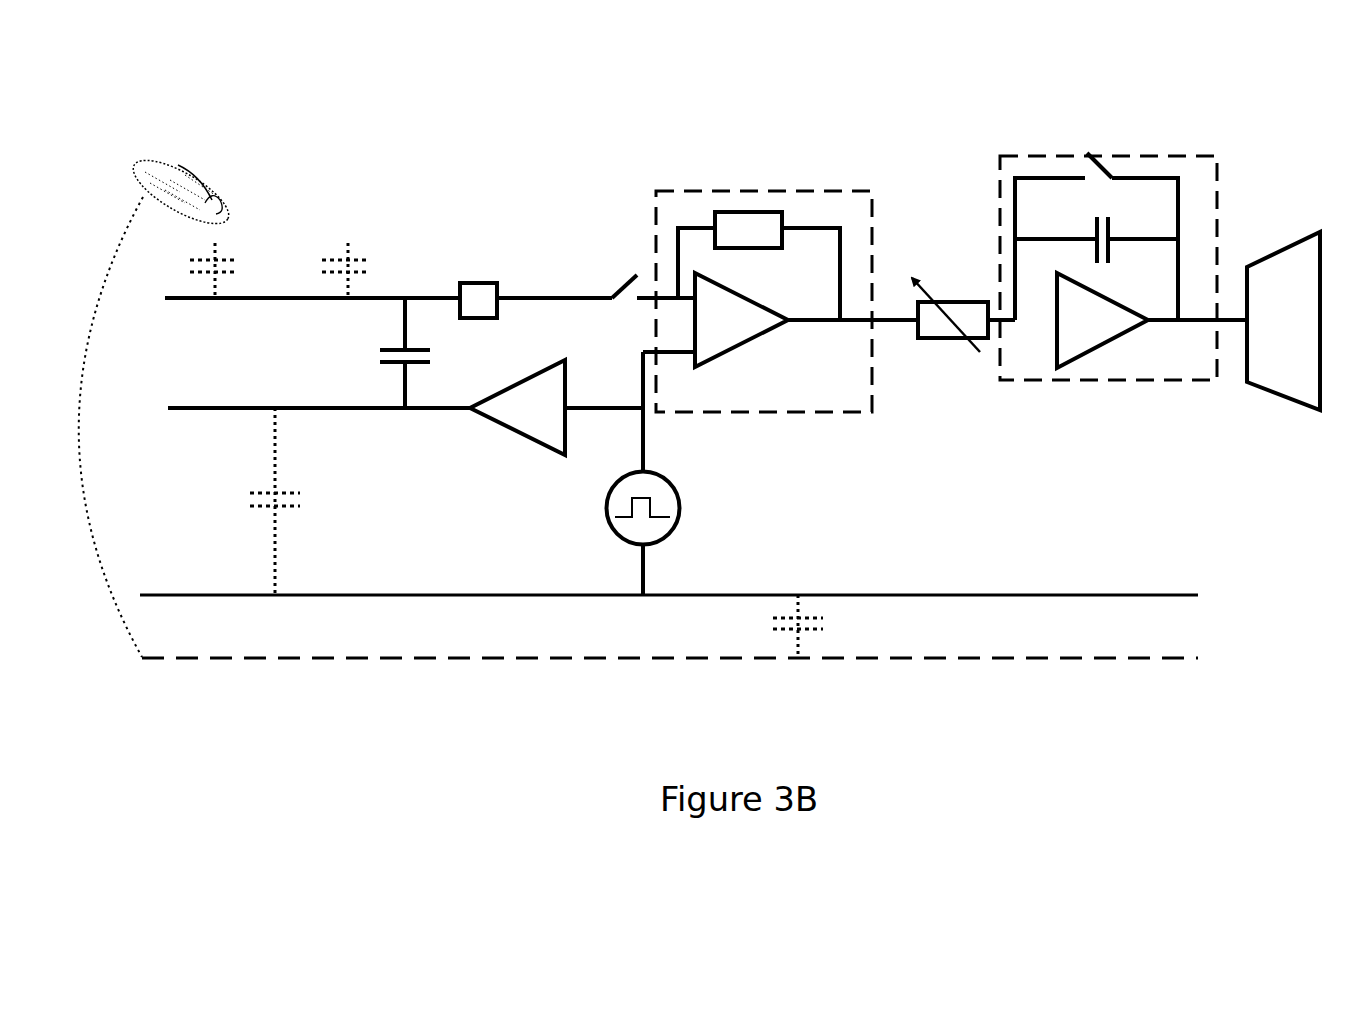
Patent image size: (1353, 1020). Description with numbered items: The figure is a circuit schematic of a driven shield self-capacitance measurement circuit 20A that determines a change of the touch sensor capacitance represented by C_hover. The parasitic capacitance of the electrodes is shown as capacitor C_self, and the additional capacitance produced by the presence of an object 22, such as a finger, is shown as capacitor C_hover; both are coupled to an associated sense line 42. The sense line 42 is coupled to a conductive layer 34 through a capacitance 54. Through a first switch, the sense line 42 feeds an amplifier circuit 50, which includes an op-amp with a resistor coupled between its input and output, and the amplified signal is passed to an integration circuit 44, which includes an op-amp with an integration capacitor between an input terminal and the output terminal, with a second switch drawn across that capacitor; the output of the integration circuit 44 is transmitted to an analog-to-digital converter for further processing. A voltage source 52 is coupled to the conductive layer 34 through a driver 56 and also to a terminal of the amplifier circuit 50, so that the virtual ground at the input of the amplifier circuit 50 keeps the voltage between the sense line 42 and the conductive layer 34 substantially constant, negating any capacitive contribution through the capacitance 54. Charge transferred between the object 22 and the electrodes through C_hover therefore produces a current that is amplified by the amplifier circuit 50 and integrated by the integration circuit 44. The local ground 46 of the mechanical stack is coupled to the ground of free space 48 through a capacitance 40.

The driven shield self-capacitance measurement circuit 20A is at (770, 90).
The object 22 is at (155, 147).
The sense line 42 is at (266, 304).
The conductive layer 34 is at (210, 412).
The capacitance 54 is at (366, 360).
The driver 56 is at (556, 407).
The amplifier circuit 50 is at (742, 301).
The voltage source 52 is at (697, 518).
The integration circuit 44 is at (1160, 269).
The local ground 46 is at (1178, 600).
The ground of free space 48 is at (1033, 663).
The capacitance 40 is at (765, 623).